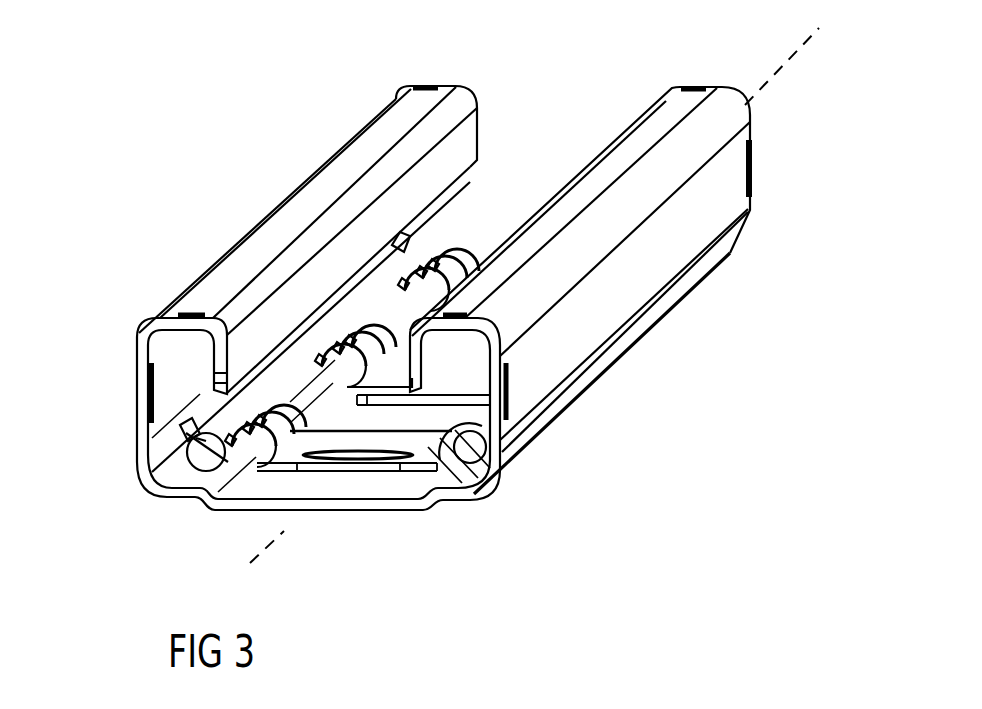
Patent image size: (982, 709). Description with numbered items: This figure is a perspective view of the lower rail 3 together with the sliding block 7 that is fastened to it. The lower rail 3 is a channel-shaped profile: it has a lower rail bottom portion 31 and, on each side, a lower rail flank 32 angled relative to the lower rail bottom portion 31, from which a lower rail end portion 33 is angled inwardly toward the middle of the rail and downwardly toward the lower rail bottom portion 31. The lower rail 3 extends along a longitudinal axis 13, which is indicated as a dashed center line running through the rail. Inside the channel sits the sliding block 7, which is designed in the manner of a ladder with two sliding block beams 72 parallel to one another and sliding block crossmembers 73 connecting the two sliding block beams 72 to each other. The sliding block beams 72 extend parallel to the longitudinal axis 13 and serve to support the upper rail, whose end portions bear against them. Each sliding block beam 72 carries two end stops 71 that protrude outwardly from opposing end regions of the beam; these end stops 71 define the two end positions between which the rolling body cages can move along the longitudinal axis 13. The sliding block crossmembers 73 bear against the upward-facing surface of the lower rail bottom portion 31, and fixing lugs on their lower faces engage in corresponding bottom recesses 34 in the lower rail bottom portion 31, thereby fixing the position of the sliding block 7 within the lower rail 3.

The lower rail 3 is at (130, 377).
The sliding block 7 is at (441, 241).
The longitudinal axis 13 is at (262, 556).
The lower rail bottom portion 31 is at (343, 508).
The lower rail flank 32 is at (137, 412).
The lower rail end portion 33 is at (225, 350).
The bottom recess 34 is at (440, 425).
The end stop 71 is at (405, 243).
The sliding block beam 72 is at (222, 440).
The sliding block crossmember 73 is at (456, 485).